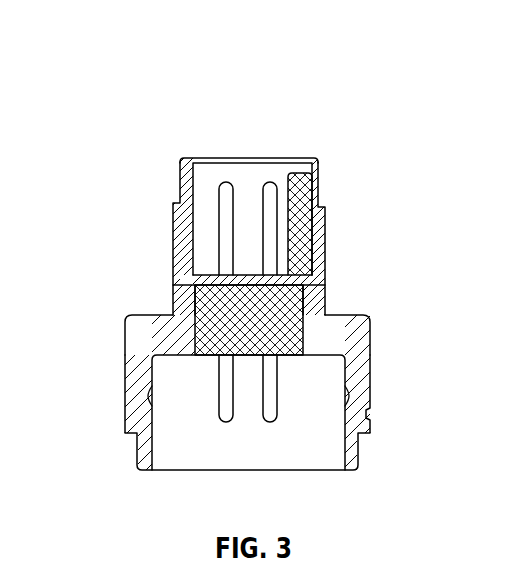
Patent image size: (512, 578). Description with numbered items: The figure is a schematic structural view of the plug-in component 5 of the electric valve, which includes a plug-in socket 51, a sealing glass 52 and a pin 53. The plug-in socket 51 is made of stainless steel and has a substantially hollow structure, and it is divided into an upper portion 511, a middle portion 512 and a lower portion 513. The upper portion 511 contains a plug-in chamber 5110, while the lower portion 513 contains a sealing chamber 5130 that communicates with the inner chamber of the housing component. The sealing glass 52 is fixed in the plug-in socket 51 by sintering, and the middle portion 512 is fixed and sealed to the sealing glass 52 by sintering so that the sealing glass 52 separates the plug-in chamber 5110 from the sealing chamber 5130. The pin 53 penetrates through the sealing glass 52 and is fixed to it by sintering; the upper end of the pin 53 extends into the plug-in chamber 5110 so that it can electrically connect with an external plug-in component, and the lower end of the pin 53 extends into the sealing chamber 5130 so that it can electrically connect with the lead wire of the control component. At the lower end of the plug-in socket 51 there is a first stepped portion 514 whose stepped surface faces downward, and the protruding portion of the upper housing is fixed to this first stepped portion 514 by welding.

The plug-in component 5 is at (238, 133).
The upper portion 511 is at (180, 248).
The middle portion 512 is at (197, 305).
The plug-in socket 51 is at (256, 397).
The lower portion 513 is at (247, 335).
The sealing chamber 5130 is at (317, 420).
The first stepped portion 514 is at (138, 435).
The sealing glass 52 is at (283, 323).
The pin 53 is at (273, 247).
The plug-in chamber 5110 is at (243, 187).